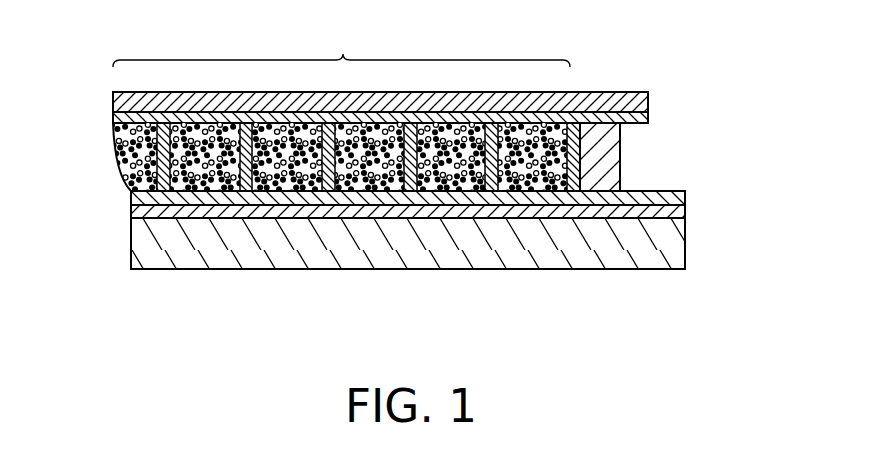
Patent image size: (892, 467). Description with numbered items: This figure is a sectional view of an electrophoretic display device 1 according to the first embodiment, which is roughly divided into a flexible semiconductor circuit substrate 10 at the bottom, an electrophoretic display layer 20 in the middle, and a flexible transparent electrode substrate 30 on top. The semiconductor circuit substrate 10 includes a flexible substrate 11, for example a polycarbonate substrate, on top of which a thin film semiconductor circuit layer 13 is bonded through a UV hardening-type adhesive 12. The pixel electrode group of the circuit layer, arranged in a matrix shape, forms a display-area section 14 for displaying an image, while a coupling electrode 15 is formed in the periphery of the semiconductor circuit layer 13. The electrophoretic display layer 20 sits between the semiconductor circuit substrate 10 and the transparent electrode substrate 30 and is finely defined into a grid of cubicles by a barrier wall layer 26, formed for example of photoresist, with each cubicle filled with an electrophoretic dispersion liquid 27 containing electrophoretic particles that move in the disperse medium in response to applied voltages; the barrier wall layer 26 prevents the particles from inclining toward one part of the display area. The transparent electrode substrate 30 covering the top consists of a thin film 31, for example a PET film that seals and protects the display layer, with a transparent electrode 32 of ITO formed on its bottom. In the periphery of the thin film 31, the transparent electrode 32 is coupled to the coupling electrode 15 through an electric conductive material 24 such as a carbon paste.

The electrophoretic display device 1 is at (430, 343).
The semiconductor circuit substrate 10 is at (481, 219).
The flexible substrate 11 is at (452, 244).
The UV hardening-type adhesive 12 is at (685, 210).
The semiconductor circuit layer 13 is at (685, 194).
The display-area section 14 is at (341, 46).
The coupling electrode 15 is at (602, 220).
The electrophoretic display layer 20 is at (334, 102).
The electric conductive material 24 is at (613, 150).
The barrier wall layer 26 is at (171, 124).
The electrophoretic dispersion liquid 27 is at (288, 140).
The transparent electrode substrate 30 is at (451, 93).
The thin film 31 is at (648, 100).
The transparent electrode 32 is at (648, 120).